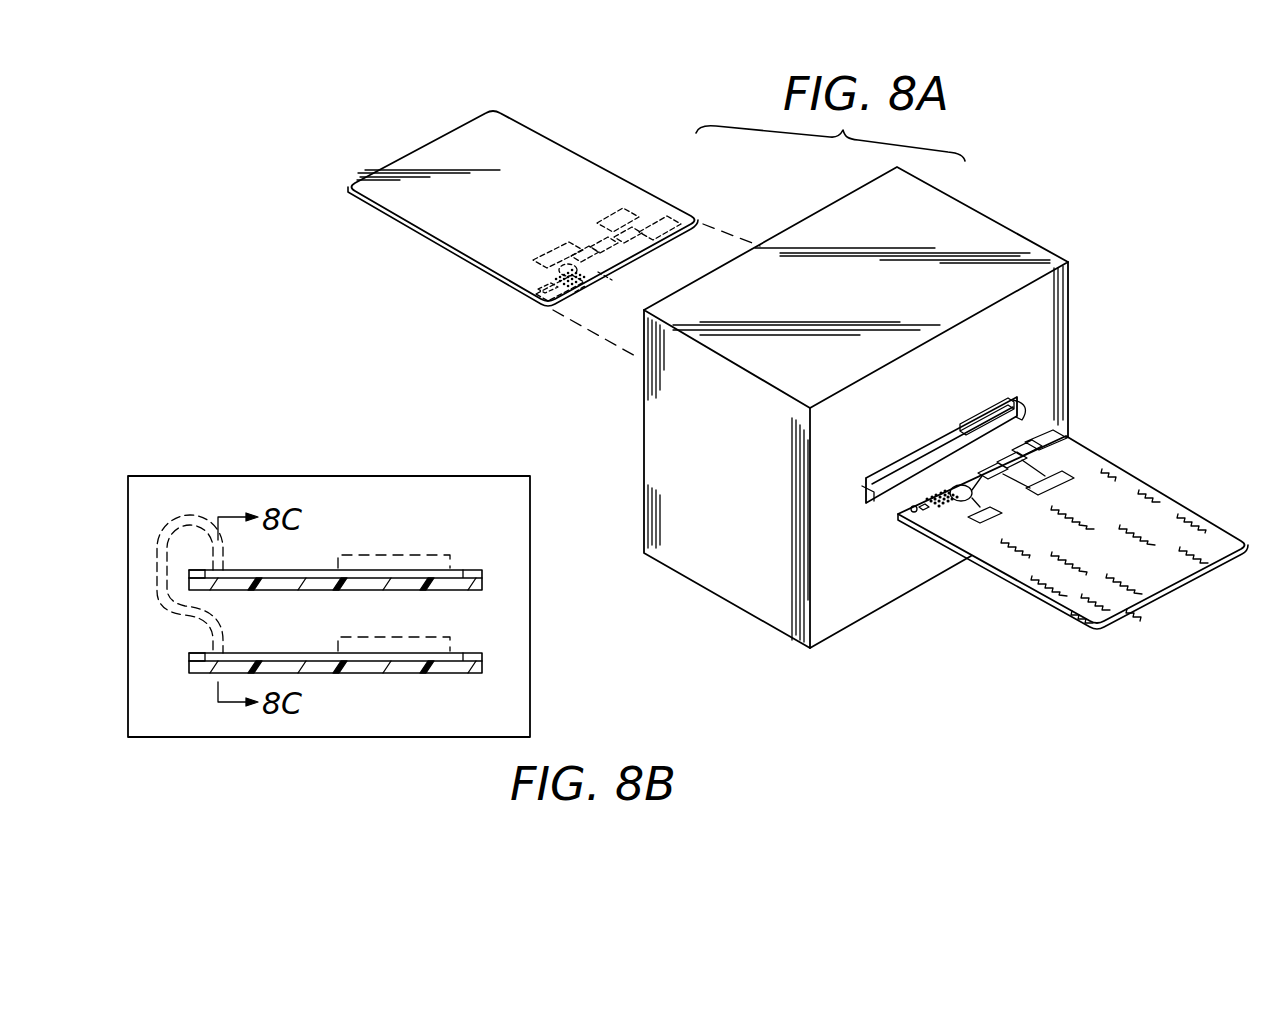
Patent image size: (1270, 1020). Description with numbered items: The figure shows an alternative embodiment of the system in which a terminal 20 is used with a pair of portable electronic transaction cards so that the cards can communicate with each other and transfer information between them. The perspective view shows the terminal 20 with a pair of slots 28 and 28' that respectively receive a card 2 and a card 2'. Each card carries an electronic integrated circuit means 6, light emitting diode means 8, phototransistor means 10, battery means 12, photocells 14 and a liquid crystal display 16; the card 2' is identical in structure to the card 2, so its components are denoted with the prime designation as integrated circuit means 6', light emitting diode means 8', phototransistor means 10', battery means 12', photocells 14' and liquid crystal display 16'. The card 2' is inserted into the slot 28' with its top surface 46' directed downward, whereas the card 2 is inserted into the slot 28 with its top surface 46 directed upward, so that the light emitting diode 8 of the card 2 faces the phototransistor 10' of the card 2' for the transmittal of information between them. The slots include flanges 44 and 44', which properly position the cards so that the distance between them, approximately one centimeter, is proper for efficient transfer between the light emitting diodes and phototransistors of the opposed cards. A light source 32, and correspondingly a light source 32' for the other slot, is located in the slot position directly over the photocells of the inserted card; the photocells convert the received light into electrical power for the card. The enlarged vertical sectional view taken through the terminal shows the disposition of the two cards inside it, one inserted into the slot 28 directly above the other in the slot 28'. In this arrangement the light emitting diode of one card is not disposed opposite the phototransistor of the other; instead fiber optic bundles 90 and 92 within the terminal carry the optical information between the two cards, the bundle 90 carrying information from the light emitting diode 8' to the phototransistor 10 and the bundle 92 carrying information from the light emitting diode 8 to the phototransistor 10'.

In FIG. 8A, the card 2 is at (1071, 529).
In FIG. 8B, the card 2 is at (345, 644).
In FIG. 8A, the card 2' is at (523, 190).
In FIG. 8B, the card 2' is at (348, 556).
In FIG. 8A, the integrated circuit means 6 is at (976, 520).
In FIG. 8A, the light emitting diode means 8 is at (903, 519).
In FIG. 8A, the phototransistor means 10 is at (896, 537).
In FIG. 8A, the battery means 12 is at (997, 515).
In FIG. 8A, the photocells 14 is at (1049, 439).
In FIG. 8A, the liquid crystal display 16 is at (973, 560).
In FIG. 8A, the terminal 20 is at (1058, 299).
In FIG. 8B, the terminal 20 is at (522, 592).
In FIG. 8A, the slot 28 is at (1065, 377).
In FIG. 8B, the slot 28 is at (250, 633).
In FIG. 8A, the slot 28' is at (941, 422).
In FIG. 8B, the slot 28' is at (276, 541).
In FIG. 8A, the light source 32 is at (967, 417).
In FIG. 8B, the light source 32 is at (402, 623).
In FIG. 8B, the light source 32' is at (394, 538).
In FIG. 8A, the flange 44 is at (1029, 382).
In FIG. 8A, the flange 44' is at (850, 469).
In FIG. 8A, the top surface 46 is at (1073, 593).
In FIG. 8A, the top surface 46' is at (523, 246).
In FIG. 8A, the integrated circuit means 6' is at (602, 294).
In FIG. 8A, the light emitting diode means 8' is at (552, 313).
In FIG. 8A, the phototransistor means 10' is at (498, 308).
In FIG. 8A, the battery means 12' is at (548, 241).
In FIG. 8A, the photocells 14' is at (619, 258).
In FIG. 8A, the liquid crystal display 16' is at (589, 200).
In FIG. 8B, the fiber optic bundle 90 is at (160, 566).
In FIG. 8B, the fiber optic bundle 92 is at (158, 607).